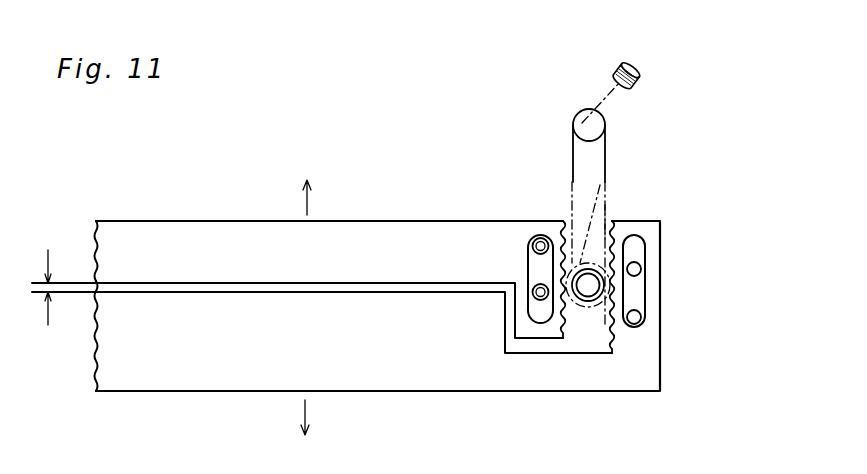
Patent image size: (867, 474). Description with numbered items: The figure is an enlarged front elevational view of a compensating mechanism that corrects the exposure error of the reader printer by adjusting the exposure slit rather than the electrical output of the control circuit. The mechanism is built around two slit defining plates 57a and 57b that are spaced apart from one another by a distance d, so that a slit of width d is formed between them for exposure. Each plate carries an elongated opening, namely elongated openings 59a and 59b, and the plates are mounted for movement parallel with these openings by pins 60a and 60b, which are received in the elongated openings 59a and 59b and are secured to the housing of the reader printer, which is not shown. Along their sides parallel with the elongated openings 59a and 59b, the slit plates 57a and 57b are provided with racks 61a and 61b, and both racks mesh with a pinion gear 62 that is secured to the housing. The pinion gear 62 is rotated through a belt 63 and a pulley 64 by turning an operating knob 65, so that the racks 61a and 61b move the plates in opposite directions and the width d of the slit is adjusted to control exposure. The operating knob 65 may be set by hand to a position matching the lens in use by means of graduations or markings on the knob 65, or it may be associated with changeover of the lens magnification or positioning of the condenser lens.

The slit defining plate 57a is at (233, 232).
The slit defining plate 57b is at (233, 377).
The slit width d is at (31, 287).
The elongated opening 59a is at (548, 266).
The elongated opening 59b is at (638, 250).
The pin 60a is at (536, 240).
The pin 60b is at (634, 318).
The rack 61a is at (566, 334).
The rack 61b is at (615, 341).
The pinion gear 62 is at (600, 200).
The belt 63 is at (607, 213).
The pulley 64 is at (580, 117).
The operating knob 65 is at (638, 68).